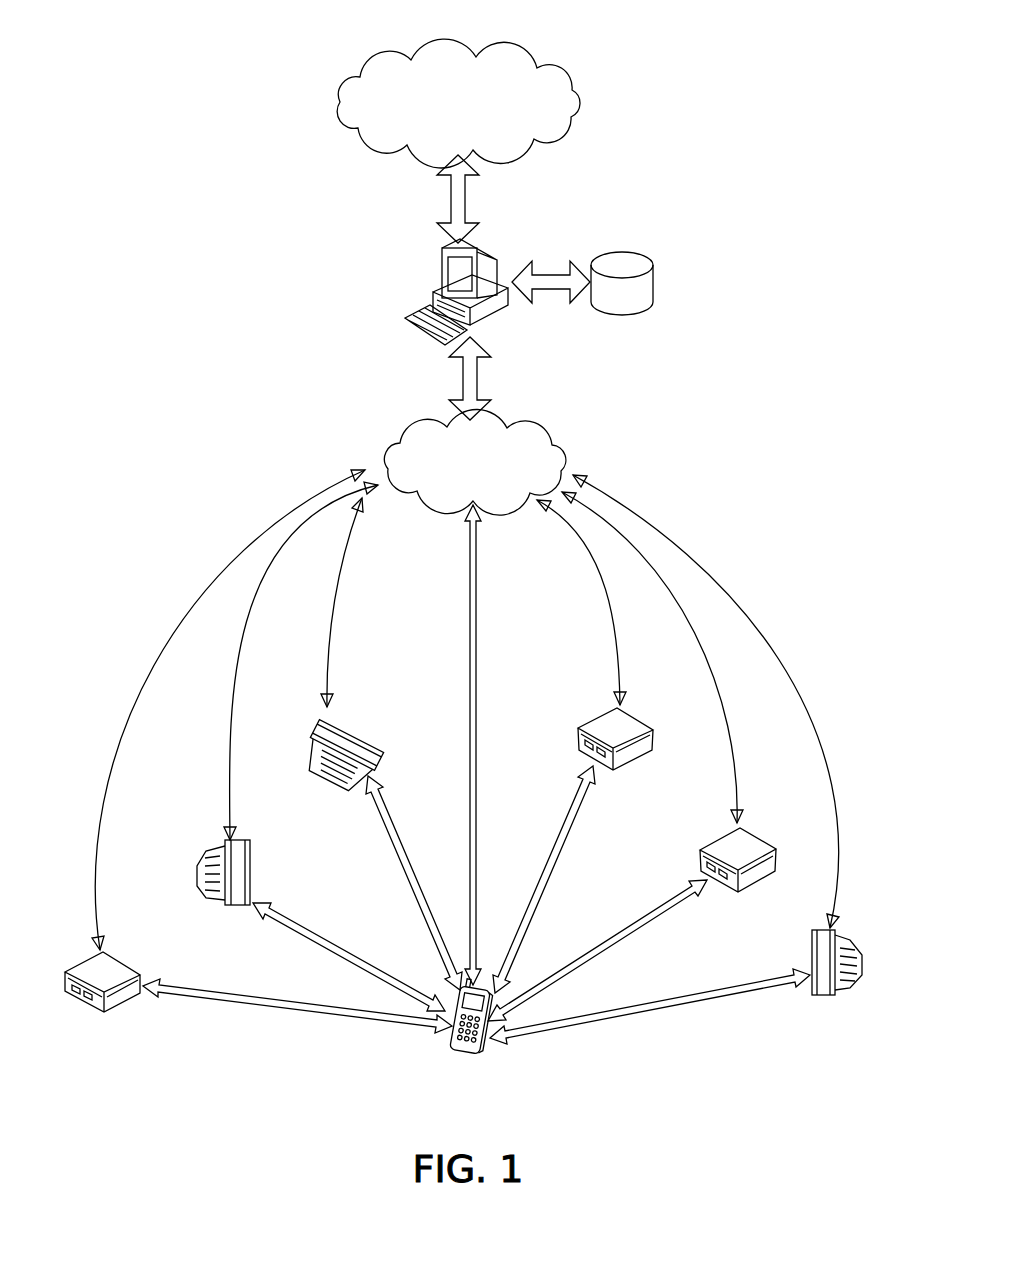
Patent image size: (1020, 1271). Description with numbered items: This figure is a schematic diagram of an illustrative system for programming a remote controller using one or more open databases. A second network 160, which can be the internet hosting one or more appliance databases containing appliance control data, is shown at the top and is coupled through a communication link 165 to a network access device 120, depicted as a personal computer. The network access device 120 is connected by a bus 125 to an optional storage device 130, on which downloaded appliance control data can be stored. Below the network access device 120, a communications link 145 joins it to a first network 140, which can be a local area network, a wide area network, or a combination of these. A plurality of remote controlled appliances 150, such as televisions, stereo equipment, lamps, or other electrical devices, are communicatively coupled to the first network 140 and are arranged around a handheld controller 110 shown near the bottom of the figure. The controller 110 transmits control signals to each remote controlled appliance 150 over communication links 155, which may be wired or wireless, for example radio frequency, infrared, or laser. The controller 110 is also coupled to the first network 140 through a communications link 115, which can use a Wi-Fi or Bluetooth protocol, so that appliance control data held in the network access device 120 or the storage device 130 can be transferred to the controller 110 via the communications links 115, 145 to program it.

The controller 110 is at (478, 1054).
The communications link 115 is at (469, 752).
The network access device 120 is at (440, 256).
The bus 125 is at (548, 290).
The storage device 130 is at (653, 272).
The first network 140 is at (525, 432).
The communications link 145 is at (460, 376).
The remote controlled appliance 150 is at (374, 735).
The communication link 155 is at (390, 846).
The second network 160 is at (333, 148).
The communication link 165 is at (470, 196).